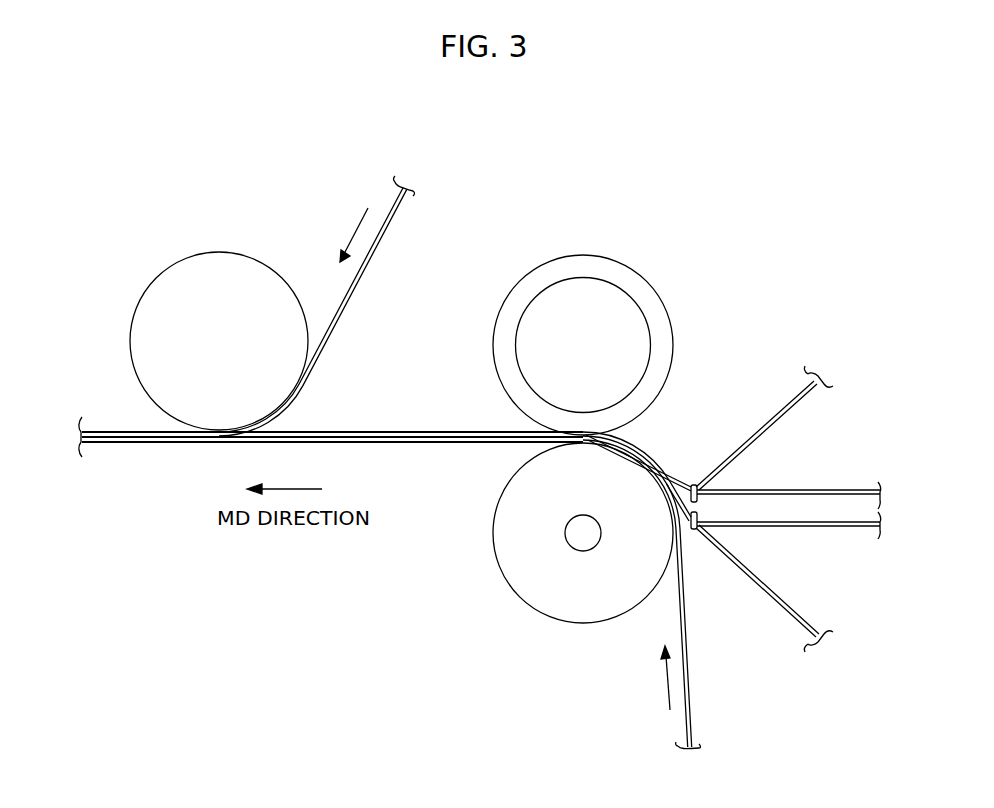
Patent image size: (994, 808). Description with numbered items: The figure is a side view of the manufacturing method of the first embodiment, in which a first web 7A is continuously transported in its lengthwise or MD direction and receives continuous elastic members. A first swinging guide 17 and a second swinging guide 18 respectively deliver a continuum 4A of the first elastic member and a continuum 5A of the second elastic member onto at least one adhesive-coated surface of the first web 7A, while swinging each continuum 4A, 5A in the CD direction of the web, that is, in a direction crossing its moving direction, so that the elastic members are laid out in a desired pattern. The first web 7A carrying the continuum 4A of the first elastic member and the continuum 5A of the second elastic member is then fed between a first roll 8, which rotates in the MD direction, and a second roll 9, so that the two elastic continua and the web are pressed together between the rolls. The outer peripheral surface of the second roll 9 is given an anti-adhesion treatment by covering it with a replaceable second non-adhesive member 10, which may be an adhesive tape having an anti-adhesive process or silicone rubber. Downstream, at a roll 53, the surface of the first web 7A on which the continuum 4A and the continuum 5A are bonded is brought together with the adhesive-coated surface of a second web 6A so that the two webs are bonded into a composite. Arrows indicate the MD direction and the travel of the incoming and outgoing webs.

The roll 53 is at (180, 280).
The second sheet material 6A is at (356, 285).
The second roll 9 is at (565, 304).
The second non-adhesive member 10 is at (627, 283).
The first roll 8 is at (587, 612).
The first web 7A is at (690, 685).
The continuum of the first elastic member 4A is at (688, 483).
The continuum of the second elastic member 5A is at (680, 518).
The first swinging guide 17 is at (777, 410).
The second swinging guide 18 is at (786, 597).